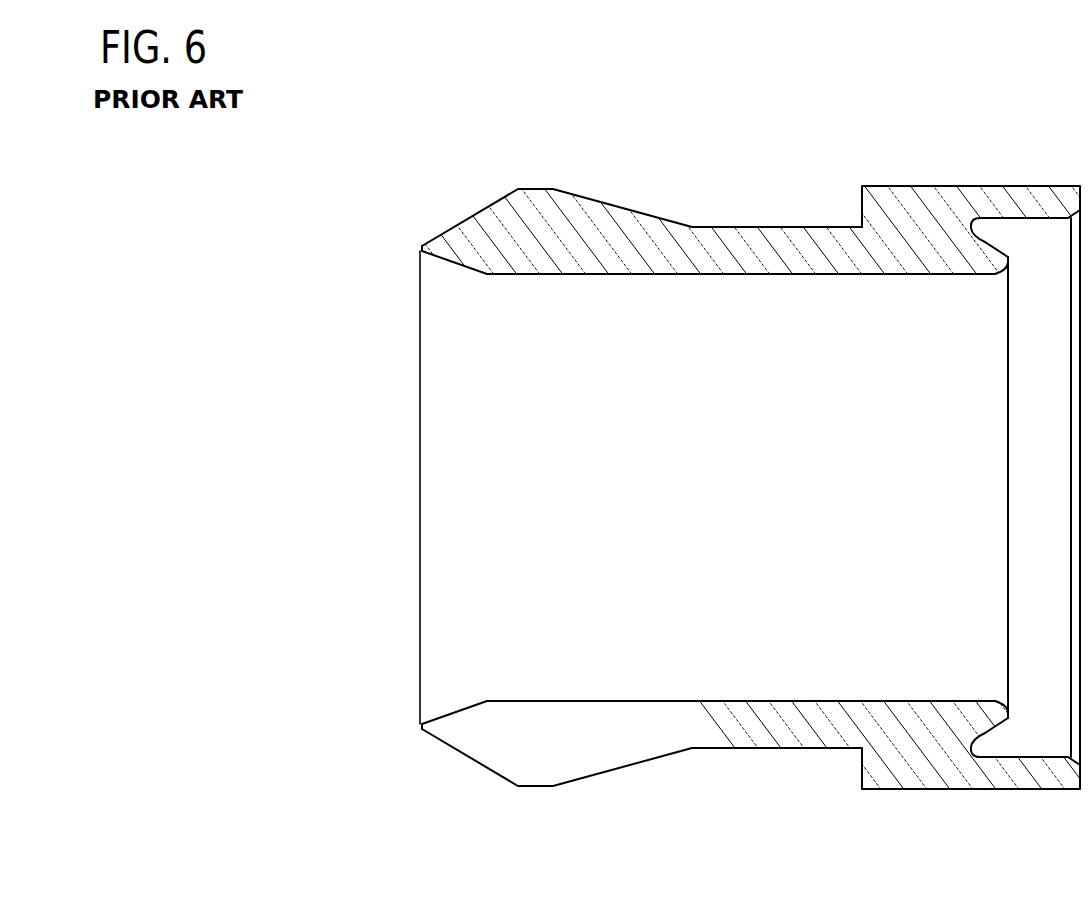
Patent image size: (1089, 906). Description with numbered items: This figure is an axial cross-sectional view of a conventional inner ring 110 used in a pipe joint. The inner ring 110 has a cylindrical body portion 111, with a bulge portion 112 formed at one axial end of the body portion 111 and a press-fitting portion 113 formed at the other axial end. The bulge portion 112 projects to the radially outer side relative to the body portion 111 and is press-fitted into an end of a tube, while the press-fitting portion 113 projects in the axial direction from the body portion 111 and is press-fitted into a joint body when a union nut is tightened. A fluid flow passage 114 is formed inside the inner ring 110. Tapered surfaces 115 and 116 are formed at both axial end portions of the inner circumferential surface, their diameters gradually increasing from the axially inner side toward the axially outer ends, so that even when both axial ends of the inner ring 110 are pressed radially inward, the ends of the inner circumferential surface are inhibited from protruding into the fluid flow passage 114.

The inner ring 110 is at (697, 173).
The body portion 111 is at (783, 242).
The bulge portion 112 is at (533, 200).
The press-fitting portion 113 is at (903, 213).
The fluid flow passage 114 is at (732, 487).
The tapered surface 115 is at (452, 267).
The tapered surface 116 is at (1000, 270).